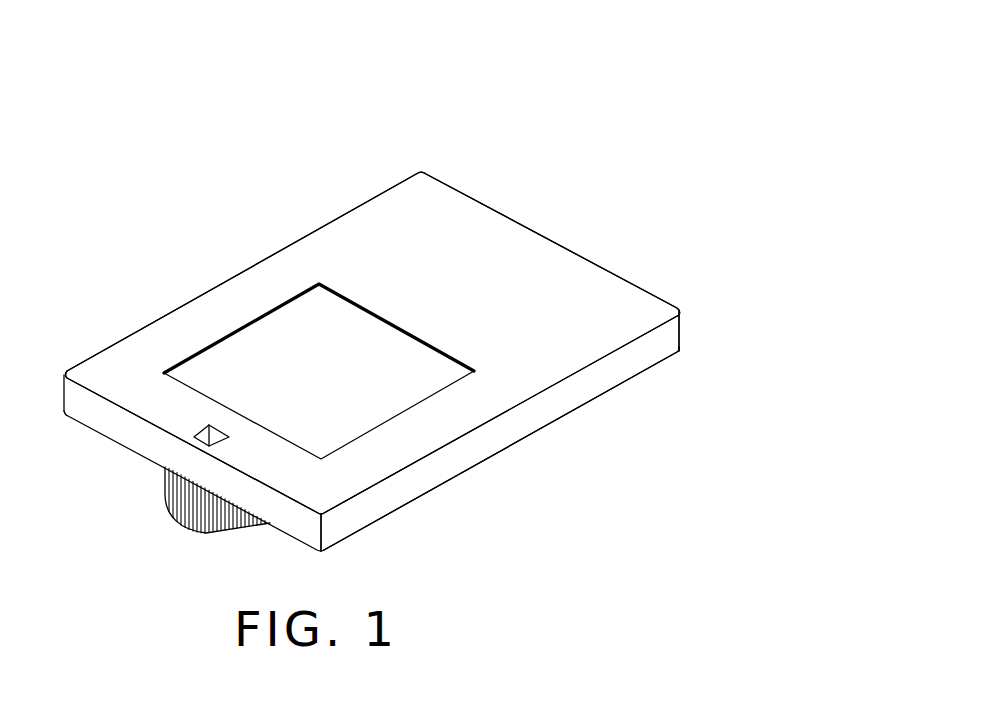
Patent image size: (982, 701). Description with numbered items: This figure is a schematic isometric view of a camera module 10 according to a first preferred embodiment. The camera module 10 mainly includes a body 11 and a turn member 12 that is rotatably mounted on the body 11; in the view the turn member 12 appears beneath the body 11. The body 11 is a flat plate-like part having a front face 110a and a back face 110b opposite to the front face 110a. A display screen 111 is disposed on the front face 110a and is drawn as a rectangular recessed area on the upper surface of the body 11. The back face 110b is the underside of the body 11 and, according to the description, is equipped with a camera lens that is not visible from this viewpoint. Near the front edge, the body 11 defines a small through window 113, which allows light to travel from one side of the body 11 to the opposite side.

The camera module 10 is at (385, 49).
The body 11 is at (581, 282).
The front face 110a is at (476, 230).
The back face 110b is at (498, 447).
The display screen 111 is at (268, 338).
The through window 113 is at (186, 429).
The turn member 12 is at (190, 495).